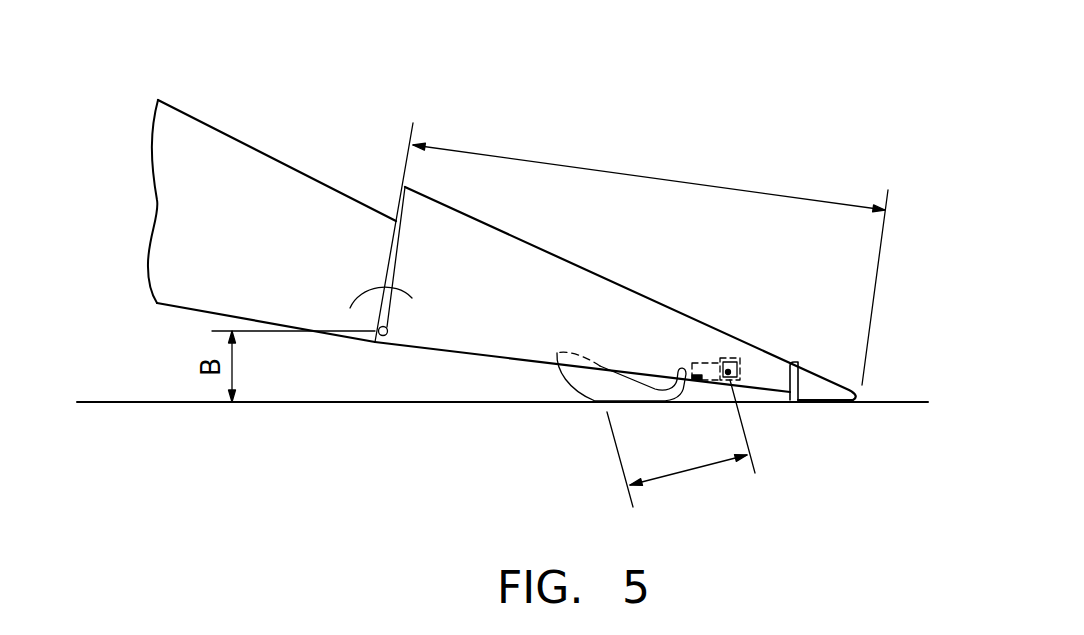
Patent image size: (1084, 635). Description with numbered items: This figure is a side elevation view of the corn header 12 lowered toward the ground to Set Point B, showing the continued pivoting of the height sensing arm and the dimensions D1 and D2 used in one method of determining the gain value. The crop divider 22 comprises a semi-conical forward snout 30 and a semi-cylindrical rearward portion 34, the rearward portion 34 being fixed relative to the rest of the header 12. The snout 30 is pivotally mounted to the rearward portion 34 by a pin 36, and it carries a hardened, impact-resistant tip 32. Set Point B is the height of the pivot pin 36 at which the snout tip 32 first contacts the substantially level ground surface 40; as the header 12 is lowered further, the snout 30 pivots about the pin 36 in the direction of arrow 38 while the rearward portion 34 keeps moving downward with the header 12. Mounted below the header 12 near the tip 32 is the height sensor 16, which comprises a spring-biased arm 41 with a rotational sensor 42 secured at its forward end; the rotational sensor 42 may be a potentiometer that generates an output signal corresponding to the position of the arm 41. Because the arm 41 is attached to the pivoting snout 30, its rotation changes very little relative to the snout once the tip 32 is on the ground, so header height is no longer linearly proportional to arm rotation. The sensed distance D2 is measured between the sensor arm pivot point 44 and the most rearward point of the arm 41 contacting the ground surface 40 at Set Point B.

The header 12 is at (314, 82).
The semi-cylindrical rearward portion 34 is at (230, 158).
The arrow 38 is at (348, 303).
The pin 36 is at (389, 329).
The snout 30 is at (500, 247).
The crop divider 22 is at (652, 256).
The ground surface 40 is at (117, 402).
The spring-biased arm 41 is at (580, 380).
The height sensor 16 is at (586, 432).
The rotational sensor 42 is at (733, 355).
The sensor arm pivot point 44 is at (757, 380).
The snout tip 32 is at (820, 390).